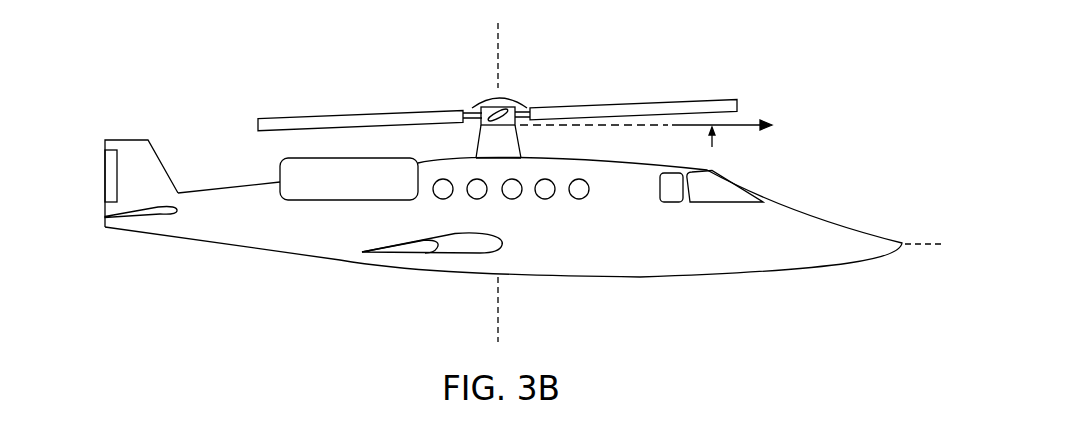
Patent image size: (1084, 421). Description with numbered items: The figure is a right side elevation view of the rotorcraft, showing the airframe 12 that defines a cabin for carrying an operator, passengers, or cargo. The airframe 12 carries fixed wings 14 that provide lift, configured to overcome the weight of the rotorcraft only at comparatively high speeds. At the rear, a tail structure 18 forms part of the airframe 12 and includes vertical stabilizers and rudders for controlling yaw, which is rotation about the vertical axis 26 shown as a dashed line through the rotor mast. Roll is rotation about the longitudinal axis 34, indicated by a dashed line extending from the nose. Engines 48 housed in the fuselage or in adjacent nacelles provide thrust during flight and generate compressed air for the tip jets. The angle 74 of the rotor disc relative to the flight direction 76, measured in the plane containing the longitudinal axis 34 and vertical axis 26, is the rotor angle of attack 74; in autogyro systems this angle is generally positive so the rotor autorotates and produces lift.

The airframe 12 is at (702, 258).
The fixed wings 14 is at (468, 245).
The tail structure 18 is at (148, 120).
The vertical axis 26 is at (498, 43).
The longitudinal axis 34 is at (918, 243).
The engines 48 is at (333, 116).
The rotor angle of attack 74 is at (707, 97).
The flight direction 76 is at (743, 128).